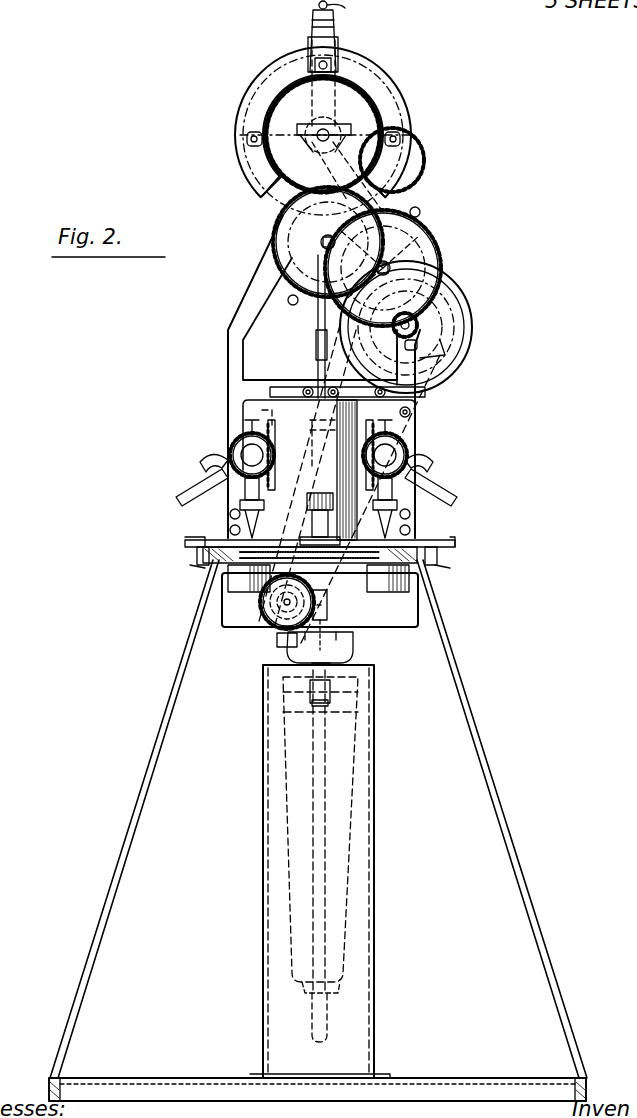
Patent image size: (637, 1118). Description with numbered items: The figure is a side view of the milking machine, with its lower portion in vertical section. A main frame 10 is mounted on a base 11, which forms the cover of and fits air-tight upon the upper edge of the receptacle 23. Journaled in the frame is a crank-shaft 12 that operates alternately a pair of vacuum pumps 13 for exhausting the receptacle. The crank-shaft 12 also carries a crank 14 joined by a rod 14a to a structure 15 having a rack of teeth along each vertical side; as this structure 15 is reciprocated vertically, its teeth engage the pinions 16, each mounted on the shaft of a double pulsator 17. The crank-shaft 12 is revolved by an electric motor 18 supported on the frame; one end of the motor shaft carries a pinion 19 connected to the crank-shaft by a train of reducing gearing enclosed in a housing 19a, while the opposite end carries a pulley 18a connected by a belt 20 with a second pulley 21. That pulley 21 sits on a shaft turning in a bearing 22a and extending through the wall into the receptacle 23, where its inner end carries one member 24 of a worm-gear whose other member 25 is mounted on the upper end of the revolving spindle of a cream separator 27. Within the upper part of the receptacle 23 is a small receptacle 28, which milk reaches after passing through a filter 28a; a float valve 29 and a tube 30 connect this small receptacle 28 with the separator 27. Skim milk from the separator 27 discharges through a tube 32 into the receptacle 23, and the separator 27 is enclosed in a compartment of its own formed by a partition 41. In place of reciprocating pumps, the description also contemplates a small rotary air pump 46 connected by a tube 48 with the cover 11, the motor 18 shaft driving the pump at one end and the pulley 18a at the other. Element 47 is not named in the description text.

The main frame 10 is at (248, 292).
The base 11 is at (408, 536).
The crank-shaft 12 is at (360, 164).
The vacuum pumps 13 is at (408, 424).
The crank 14 is at (372, 125).
The rod 14a is at (390, 160).
The structure having rack teeth 15 is at (305, 392).
The pinions 16 is at (232, 446).
The double pulsator 17 is at (200, 486).
The electric motor 18 is at (455, 312).
The pulley 18a is at (445, 352).
The pinion 19 is at (436, 290).
The housing 19a is at (418, 226).
The belt 20 is at (323, 368).
The second pulley 21 is at (285, 640).
The bearing 22a is at (298, 645).
The receptacle 23 is at (472, 724).
The worm-gear member 24 is at (265, 618).
The worm-gear member 25 is at (328, 601).
The cream separator 27 is at (338, 820).
The small receptacle 28 is at (400, 613).
The filter 28a is at (240, 580).
The float valve 29 is at (346, 648).
The tube 30 is at (325, 760).
The tube 32 is at (330, 702).
The partition 41 is at (362, 922).
The rotary air pump 46 is at (332, 40).
The hook 47 is at (332, 8).
The tube 48 is at (192, 554).